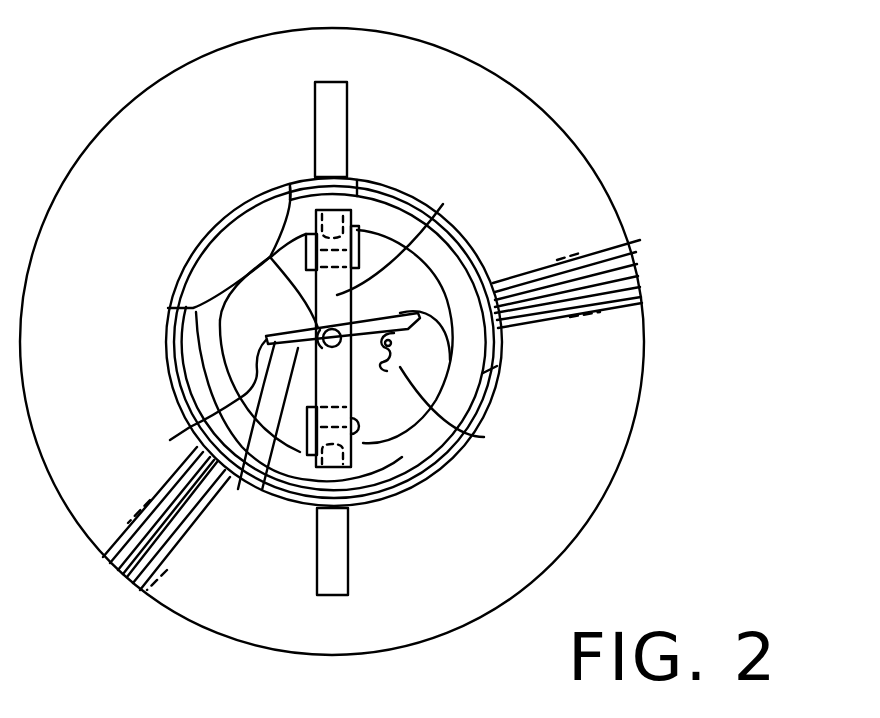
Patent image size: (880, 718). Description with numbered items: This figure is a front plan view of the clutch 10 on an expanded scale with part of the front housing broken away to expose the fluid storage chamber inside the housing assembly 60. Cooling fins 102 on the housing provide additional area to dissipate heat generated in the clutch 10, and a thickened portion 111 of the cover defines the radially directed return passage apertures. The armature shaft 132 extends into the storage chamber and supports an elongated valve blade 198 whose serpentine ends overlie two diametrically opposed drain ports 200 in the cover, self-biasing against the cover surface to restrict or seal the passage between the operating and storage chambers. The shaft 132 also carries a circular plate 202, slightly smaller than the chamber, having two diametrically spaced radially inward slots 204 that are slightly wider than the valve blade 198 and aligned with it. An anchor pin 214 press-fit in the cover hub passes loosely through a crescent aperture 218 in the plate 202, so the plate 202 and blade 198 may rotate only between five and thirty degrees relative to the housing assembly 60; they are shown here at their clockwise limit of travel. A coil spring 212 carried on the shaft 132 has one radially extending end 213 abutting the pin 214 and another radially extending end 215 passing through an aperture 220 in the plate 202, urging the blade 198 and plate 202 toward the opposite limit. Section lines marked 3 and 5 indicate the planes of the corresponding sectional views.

The clutch 10 is at (585, 116).
The housing assembly 60 is at (152, 115).
The cooling fins 102 is at (636, 254).
The thickened portion 111 is at (328, 113).
The armature shaft 132 is at (270, 258).
The valve blade 198 is at (456, 196).
The drain ports 200 is at (350, 197).
The circular plate 202 is at (373, 255).
The slots 204 is at (271, 255).
The coil spring 212 is at (255, 490).
The radially extending end 213 is at (490, 368).
The anchor pin 214 is at (470, 412).
The radially extending end 215 is at (192, 449).
The crescent aperture 218 is at (337, 295).
The aperture 220 is at (200, 430).
The section line 3- 3 is at (328, 72).
The section line 5- 5 is at (292, 329).